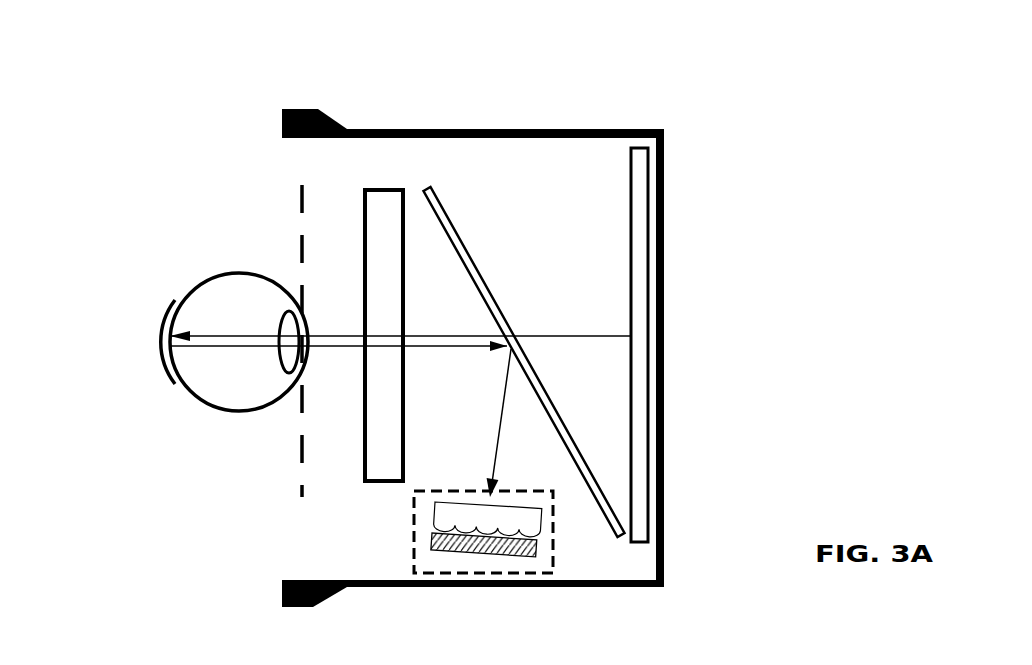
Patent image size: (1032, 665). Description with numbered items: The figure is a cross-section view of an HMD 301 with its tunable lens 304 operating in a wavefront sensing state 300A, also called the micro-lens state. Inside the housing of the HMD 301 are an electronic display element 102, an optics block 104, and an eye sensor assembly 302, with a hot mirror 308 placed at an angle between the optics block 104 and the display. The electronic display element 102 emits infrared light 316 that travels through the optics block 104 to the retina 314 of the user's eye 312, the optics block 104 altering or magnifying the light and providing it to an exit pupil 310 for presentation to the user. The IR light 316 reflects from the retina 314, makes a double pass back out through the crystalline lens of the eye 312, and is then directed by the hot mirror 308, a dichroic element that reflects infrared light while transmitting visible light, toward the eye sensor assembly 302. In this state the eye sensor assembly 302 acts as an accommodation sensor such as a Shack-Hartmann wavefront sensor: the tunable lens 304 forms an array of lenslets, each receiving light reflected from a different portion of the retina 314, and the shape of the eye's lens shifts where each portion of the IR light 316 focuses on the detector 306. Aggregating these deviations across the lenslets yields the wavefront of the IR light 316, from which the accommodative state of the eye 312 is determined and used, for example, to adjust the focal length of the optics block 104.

The wavefront sensing state 300A is at (273, 25).
The HMD 301 is at (683, 80).
The optics block 104 is at (364, 191).
The electronic display element 102 is at (641, 280).
The hot mirror 308 is at (600, 496).
The infrared light 316 is at (588, 336).
The eye 312 is at (186, 293).
The retina 314 is at (160, 333).
The exit pupil 310 is at (296, 480).
The eye sensor assembly 302 is at (411, 499).
The tunable lens 304 is at (530, 525).
The detector 306 is at (516, 558).